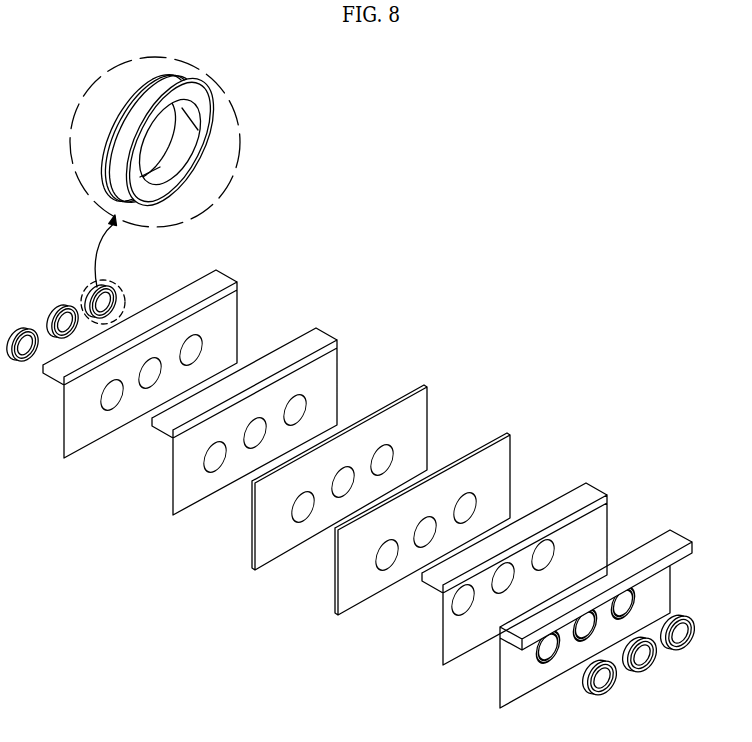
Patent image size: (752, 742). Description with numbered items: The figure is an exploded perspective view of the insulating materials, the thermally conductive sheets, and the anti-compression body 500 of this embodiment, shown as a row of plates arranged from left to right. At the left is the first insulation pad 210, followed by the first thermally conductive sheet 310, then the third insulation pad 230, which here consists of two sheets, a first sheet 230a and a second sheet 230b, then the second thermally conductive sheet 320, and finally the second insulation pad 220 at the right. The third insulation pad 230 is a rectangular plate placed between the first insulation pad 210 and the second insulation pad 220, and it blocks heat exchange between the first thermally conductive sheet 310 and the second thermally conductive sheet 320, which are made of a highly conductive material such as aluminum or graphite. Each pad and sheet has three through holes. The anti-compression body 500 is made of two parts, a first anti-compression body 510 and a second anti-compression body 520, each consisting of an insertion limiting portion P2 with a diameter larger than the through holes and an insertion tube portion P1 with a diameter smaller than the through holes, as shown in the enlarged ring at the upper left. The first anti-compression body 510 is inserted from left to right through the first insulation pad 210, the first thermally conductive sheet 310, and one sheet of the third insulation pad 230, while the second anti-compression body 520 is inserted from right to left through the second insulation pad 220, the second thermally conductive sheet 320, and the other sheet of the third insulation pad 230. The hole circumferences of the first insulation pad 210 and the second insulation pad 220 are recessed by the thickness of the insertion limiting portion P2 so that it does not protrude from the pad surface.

The first insulation pad 210 is at (166, 353).
The first thermally conductive sheet 310 is at (342, 332).
The third insulation pad 230 is at (417, 485).
The first intermediate plate 230a is at (420, 423).
The second intermediate plate 230b is at (456, 512).
The second thermally conductive sheet 320 is at (602, 485).
The second insulation pad 220 is at (616, 605).
The anti-compression body 500 is at (354, 398).
The first anti-compression body 510 is at (123, 211).
The second anti-compression body 520 is at (675, 650).
The insertion tube portion P1 is at (143, 198).
The insertion limiting portion P2 is at (103, 187).